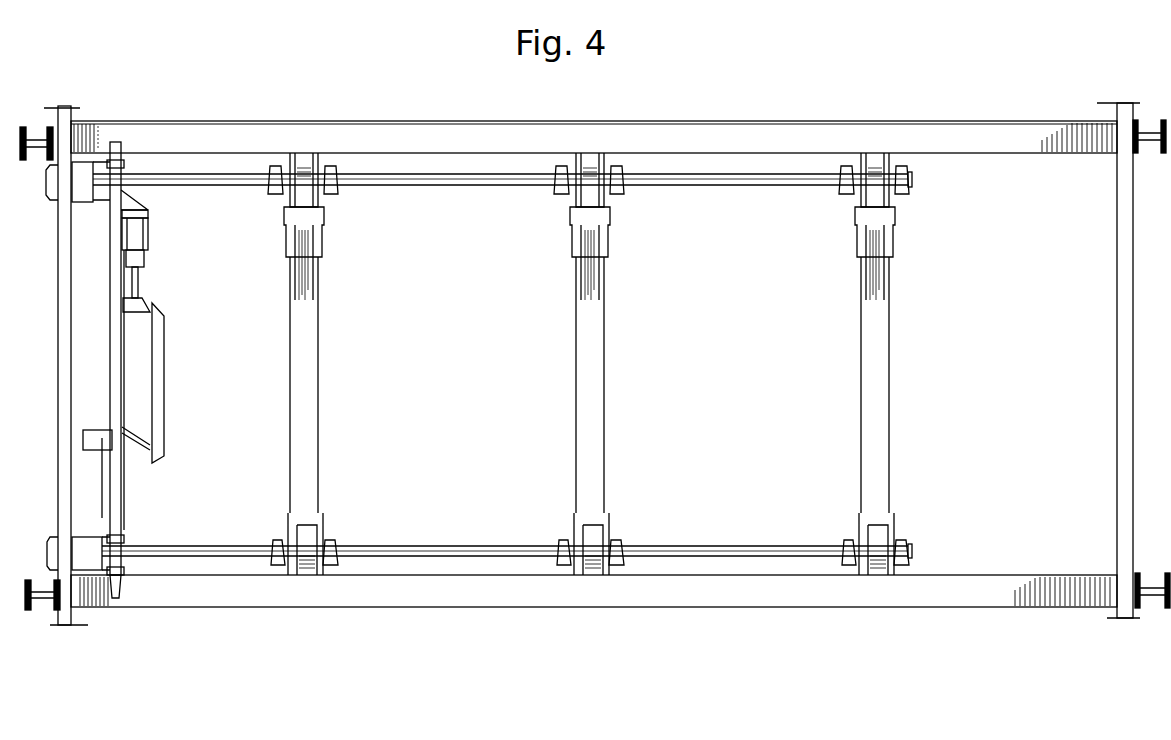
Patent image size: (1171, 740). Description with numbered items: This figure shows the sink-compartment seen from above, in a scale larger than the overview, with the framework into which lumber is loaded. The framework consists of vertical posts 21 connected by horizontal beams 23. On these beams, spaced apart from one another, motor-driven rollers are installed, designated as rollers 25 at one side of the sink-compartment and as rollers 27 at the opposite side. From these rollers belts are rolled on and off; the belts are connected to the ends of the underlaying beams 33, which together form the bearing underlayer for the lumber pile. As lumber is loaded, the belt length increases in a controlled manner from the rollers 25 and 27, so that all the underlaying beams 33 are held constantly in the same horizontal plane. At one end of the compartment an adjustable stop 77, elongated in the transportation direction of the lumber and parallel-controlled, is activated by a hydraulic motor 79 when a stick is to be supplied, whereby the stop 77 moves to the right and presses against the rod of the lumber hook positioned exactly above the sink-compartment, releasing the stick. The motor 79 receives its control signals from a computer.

The vertical posts 21 is at (38, 140).
The horizontal beams 23 is at (828, 133).
The motor-driven rollers 25 is at (300, 165).
The motor-driven rollers 27 is at (595, 566).
The underlaying beams 33 is at (310, 372).
The adjustable stop 77 is at (160, 382).
The hydraulic motor 79 is at (142, 234).